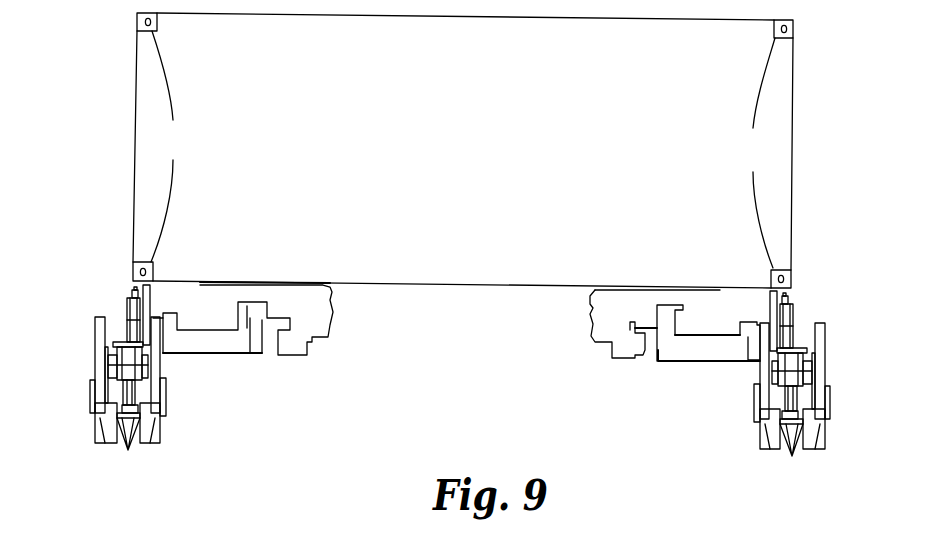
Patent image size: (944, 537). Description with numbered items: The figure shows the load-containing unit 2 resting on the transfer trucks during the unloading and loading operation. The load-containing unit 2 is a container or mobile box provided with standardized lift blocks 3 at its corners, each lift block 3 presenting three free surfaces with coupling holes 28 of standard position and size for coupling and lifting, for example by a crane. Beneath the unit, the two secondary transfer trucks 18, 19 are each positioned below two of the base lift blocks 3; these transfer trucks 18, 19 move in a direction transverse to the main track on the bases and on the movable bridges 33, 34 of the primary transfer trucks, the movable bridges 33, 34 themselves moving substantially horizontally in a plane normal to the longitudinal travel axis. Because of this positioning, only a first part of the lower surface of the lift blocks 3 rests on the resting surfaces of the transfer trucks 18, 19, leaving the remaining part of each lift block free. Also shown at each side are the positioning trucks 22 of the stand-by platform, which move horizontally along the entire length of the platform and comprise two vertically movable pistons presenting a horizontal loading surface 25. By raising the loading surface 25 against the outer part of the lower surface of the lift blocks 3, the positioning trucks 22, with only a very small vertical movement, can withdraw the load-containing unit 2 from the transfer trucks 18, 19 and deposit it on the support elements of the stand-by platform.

The load-containing unit 2 is at (516, 167).
The lift block 3 is at (463, 149).
The secondary transfer truck 18 is at (702, 305).
The secondary transfer truck 19 is at (217, 305).
The positioning truck 22 is at (454, 342).
The loading surface 25 is at (132, 288).
The coupling hole 28 is at (154, 272).
The movable bridge 33 is at (727, 348).
The movable bridge 34 is at (188, 347).